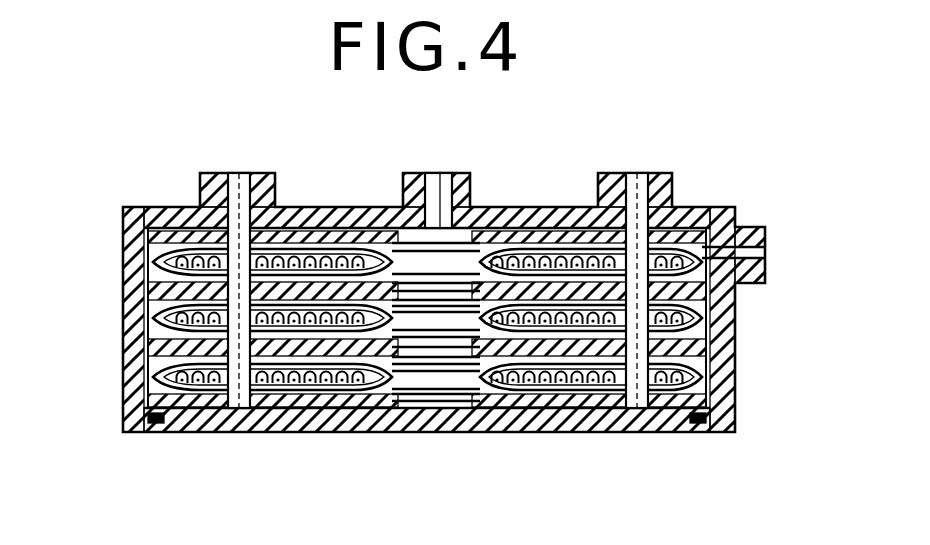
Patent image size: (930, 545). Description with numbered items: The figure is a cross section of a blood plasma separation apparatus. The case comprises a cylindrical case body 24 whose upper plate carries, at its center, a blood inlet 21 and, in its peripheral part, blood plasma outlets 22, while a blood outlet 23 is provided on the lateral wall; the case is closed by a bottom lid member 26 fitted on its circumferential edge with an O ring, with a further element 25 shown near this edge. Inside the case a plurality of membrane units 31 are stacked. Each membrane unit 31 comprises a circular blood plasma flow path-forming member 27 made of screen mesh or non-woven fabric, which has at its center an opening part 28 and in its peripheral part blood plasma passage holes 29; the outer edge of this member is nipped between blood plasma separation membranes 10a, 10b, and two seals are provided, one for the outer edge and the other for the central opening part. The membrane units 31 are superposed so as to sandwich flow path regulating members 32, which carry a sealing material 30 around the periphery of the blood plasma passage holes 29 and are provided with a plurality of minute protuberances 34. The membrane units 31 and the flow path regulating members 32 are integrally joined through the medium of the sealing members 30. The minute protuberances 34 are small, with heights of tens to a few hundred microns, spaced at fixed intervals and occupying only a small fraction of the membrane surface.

The blood plasma separation membrane 10a is at (206, 242).
The blood plasma separation membrane 10b is at (142, 296).
The blood inlet 21 is at (437, 190).
The blood plasma outlet 22 is at (240, 185).
The blood outlet 23 is at (765, 253).
The cylindrical case body 24 is at (110, 298).
The bottom plate block 25 is at (700, 432).
The bottom lid member 26 is at (437, 432).
The blood plasma flow path-forming member 27 is at (700, 377).
The opening part 28 is at (446, 256).
The blood plasma passage hole 29 is at (656, 224).
The sealing material 30 is at (266, 400).
The membrane unit 31 is at (710, 305).
The flow path regulating member 32 is at (710, 348).
The minute protuberance 34 is at (299, 405).